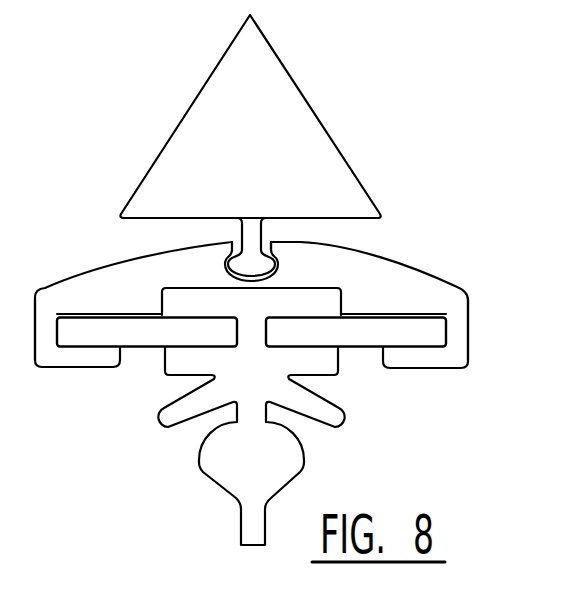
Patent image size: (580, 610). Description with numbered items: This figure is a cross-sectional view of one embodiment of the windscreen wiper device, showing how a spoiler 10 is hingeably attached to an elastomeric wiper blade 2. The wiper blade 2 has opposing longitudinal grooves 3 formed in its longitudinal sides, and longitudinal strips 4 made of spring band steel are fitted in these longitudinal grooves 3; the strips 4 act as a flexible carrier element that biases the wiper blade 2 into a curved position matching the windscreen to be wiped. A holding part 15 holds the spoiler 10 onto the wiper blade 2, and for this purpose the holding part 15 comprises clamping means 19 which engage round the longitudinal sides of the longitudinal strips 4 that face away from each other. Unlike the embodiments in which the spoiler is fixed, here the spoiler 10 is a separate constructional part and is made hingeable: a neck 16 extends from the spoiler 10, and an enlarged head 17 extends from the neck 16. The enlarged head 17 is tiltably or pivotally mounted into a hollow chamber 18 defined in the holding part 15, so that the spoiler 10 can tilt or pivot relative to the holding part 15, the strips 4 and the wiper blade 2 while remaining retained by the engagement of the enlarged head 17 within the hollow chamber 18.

The wiper blade 2 is at (283, 462).
The longitudinal grooves 3 is at (233, 332).
The longitudinal strips 4 is at (140, 335).
The spoiler 10 is at (283, 145).
The holding part 15 is at (405, 293).
The neck 16 is at (248, 232).
The enlarged head 17 is at (247, 263).
The hollow chamber 18 is at (279, 267).
The clamping means 19 is at (50, 353).